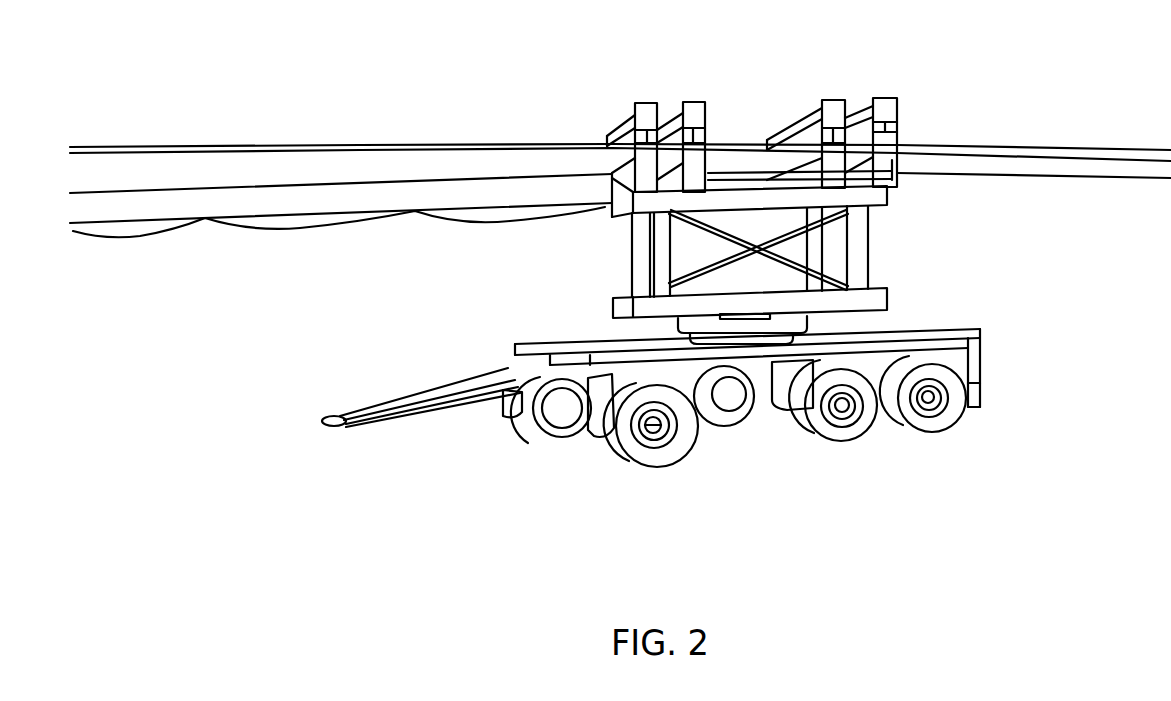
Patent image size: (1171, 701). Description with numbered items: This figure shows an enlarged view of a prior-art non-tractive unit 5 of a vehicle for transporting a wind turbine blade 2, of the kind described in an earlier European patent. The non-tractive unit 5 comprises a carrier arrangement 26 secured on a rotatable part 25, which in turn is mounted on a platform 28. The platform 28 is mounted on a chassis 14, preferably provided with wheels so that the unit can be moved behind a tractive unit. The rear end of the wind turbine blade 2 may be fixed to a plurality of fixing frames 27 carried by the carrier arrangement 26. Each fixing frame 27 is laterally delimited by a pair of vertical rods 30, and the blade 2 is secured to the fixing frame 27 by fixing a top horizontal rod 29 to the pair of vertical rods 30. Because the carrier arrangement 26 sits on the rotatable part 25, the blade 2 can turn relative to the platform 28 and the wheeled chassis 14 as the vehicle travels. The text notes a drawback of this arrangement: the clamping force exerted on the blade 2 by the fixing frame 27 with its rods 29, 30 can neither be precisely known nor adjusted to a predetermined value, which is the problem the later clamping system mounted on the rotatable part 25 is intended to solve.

The wind turbine blade 2 is at (415, 197).
The non-tractive unit 5 is at (889, 283).
The trailer 14 is at (651, 439).
The rotatable part 25 is at (740, 330).
The carrier arrangement 26 is at (720, 195).
The fixing frame 27 is at (893, 108).
The platform 28 is at (678, 342).
The top horizontal rod 29 is at (800, 122).
The vertical rod 30 is at (893, 167).